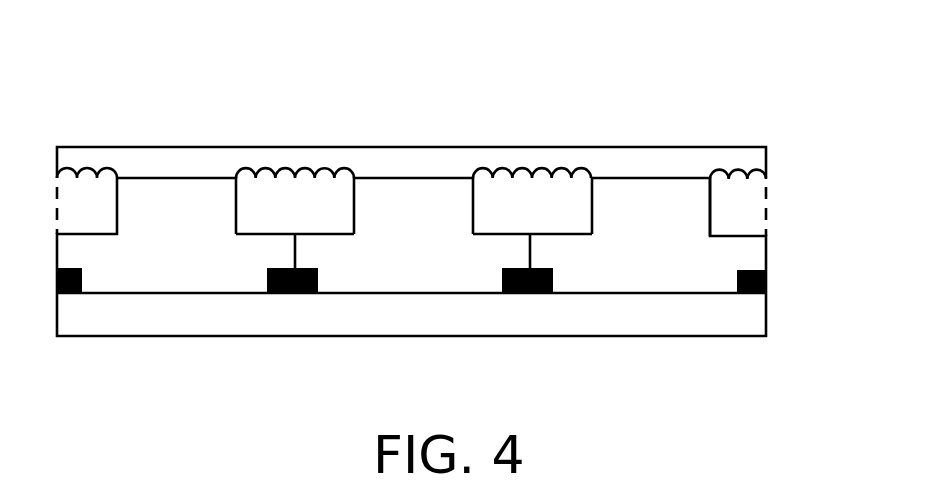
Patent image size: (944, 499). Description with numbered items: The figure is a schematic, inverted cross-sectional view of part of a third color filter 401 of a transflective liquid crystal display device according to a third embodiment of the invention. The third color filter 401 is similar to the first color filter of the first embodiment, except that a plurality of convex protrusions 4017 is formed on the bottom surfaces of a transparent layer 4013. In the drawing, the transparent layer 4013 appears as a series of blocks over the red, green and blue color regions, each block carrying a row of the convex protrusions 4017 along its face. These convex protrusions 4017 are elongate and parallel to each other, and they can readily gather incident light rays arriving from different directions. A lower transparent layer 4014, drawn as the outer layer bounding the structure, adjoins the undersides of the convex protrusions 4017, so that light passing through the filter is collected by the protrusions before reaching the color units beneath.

The third color filter 401 is at (425, 44).
The transparent layer 4013 is at (743, 208).
The lower transparent layer 4014 is at (753, 159).
The convex protrusions 4017 is at (547, 168).